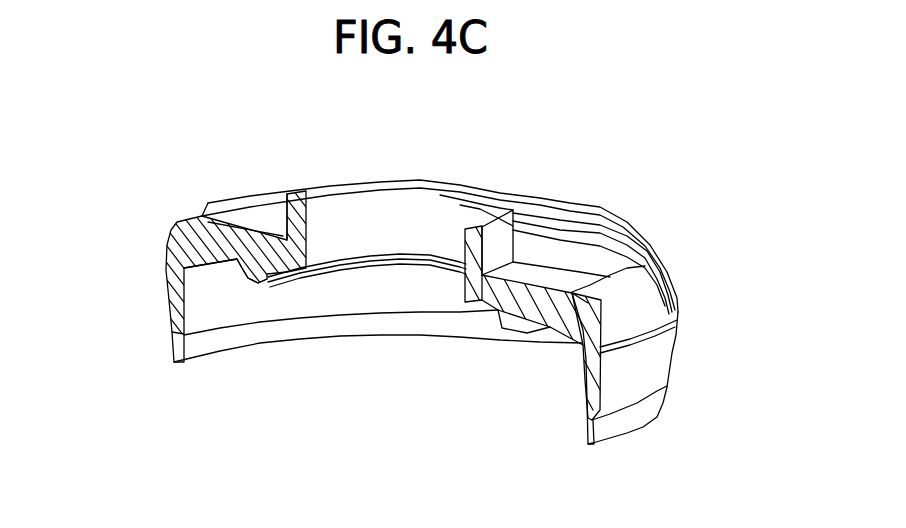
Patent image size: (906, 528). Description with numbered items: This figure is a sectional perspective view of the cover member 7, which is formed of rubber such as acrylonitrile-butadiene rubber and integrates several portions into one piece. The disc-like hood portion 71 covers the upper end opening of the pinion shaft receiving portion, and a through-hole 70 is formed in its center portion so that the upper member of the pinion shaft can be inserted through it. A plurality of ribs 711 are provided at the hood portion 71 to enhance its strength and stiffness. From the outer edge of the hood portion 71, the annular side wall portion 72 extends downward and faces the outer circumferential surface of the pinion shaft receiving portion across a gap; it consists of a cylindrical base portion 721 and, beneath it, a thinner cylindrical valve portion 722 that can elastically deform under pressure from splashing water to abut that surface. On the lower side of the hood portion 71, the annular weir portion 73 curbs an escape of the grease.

The cover member 7 is at (204, 160).
The through-hole 70 is at (422, 182).
The hood portion 71 is at (582, 276).
The ribs 711 is at (563, 230).
The side wall portion 72 is at (745, 372).
The base portion 721 is at (650, 363).
The valve portion 722 is at (657, 398).
The weir portion 73 is at (248, 274).